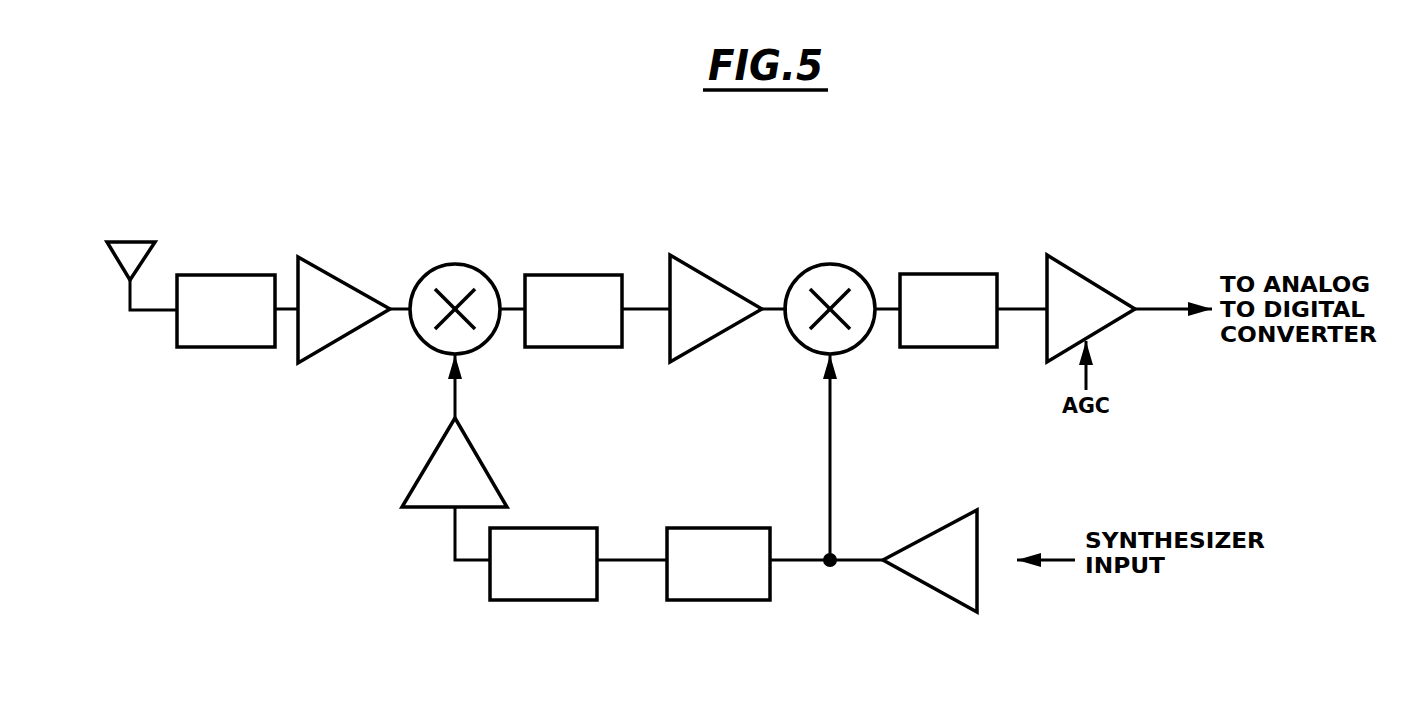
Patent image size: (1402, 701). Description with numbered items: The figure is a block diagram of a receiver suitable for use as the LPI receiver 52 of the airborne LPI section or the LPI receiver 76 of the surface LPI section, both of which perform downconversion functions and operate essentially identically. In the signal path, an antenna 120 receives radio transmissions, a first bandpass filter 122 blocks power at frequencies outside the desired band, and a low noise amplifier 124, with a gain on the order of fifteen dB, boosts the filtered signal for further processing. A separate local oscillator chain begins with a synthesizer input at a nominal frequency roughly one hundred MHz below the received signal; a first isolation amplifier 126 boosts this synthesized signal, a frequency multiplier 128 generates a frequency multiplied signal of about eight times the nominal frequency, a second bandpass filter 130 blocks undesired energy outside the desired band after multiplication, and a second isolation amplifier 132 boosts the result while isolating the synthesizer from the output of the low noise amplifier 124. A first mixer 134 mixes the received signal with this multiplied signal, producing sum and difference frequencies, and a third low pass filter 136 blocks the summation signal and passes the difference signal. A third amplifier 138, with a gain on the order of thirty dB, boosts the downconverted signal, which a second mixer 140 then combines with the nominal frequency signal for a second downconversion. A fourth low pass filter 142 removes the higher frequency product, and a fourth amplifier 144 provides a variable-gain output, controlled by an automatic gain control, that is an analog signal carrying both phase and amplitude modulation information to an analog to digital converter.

The LPI receiver 52 is at (736, 144).
The LPI receiver 76 is at (713, 161).
The antenna 120 is at (163, 222).
The first bandpass filter 122 is at (217, 297).
The low noise amplifier 124 is at (334, 282).
The first isolation amplifier 126 is at (947, 537).
The frequency multiplier 128 is at (688, 583).
The second bandpass filter 130 is at (510, 583).
The second isolation amplifier 132 is at (473, 485).
The first mixer 134 is at (438, 286).
The third low pass filter 136 is at (547, 288).
The third amplifier 138 is at (700, 292).
The second mixer 140 is at (815, 286).
The fourth low pass filter 142 is at (928, 282).
The fourth amplifier 144 is at (1067, 276).